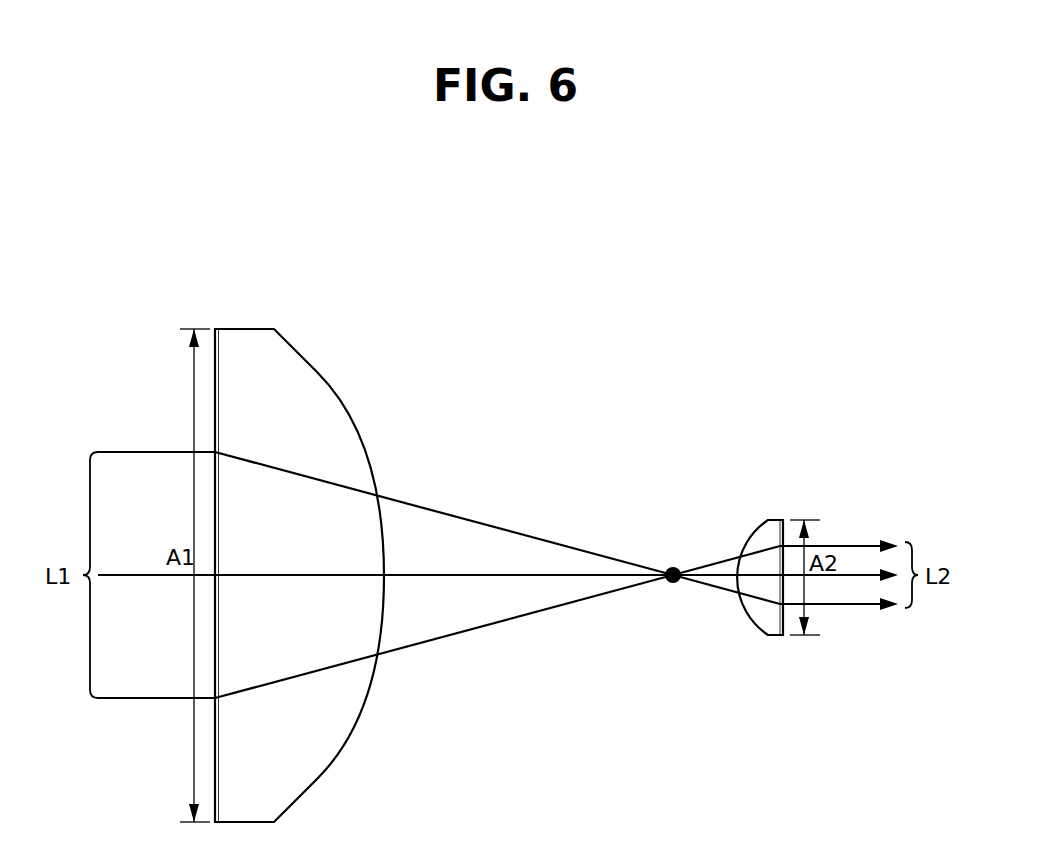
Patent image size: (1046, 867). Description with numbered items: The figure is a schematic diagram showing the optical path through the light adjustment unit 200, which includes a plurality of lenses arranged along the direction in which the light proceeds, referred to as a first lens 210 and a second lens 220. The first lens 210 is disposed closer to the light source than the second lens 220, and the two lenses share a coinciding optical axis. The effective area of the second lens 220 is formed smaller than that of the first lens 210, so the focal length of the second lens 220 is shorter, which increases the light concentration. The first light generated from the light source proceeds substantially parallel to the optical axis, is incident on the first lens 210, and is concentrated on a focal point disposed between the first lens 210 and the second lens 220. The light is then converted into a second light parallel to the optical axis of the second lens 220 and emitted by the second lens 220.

The light adjustment unit 200 is at (721, 270).
The first lens 210 is at (305, 392).
The second lens 220 is at (775, 525).